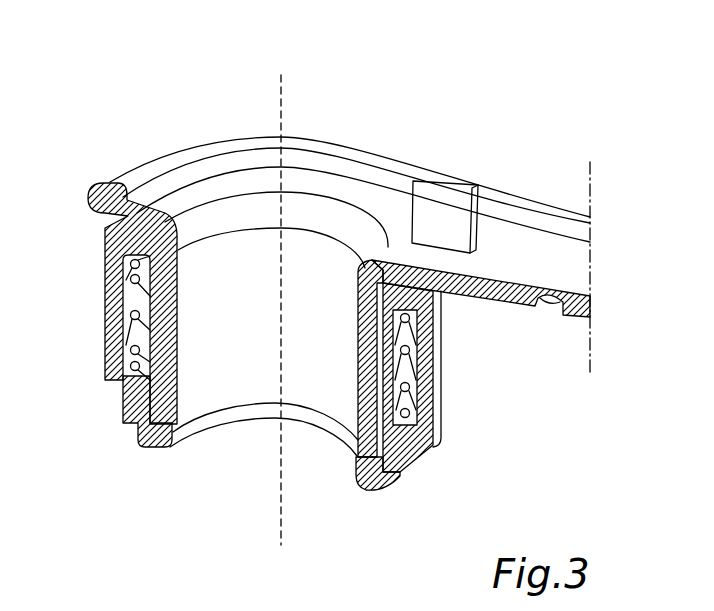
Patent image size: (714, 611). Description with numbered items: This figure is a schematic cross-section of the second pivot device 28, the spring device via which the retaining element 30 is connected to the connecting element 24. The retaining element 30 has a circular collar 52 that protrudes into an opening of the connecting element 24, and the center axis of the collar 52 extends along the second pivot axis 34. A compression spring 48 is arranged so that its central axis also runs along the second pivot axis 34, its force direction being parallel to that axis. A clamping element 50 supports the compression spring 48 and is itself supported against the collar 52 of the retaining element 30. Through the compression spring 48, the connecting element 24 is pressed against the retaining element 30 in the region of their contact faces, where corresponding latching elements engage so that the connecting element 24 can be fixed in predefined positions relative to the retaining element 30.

The second pivot device 28 is at (167, 116).
The retaining element 30 is at (525, 237).
The second pivot axis 34 is at (281, 105).
The connecting element 24 is at (433, 385).
The compression spring 48 is at (413, 347).
The clamping element 50 is at (392, 490).
The circular collar 52 is at (193, 357).